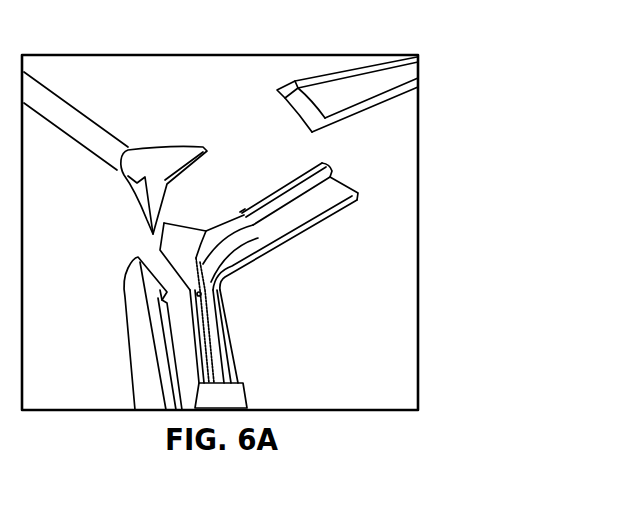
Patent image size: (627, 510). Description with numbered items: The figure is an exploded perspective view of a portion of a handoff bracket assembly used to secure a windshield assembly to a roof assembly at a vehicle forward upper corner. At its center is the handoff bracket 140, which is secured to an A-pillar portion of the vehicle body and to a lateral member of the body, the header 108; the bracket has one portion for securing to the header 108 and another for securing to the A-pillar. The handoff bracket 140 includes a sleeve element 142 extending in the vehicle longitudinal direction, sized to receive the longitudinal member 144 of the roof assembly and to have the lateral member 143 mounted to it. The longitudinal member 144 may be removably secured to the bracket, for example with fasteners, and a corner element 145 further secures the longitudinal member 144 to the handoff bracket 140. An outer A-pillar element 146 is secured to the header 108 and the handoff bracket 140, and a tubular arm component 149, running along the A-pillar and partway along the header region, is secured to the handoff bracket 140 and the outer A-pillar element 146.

The header 108 is at (225, 297).
The handoff bracket 140 is at (200, 224).
The sleeve element 142 is at (255, 257).
The lateral member 143 is at (373, 93).
The longitudinal member 144 is at (82, 108).
The corner element 145 is at (148, 160).
The outer A-pillar element 146 is at (128, 335).
The arm component 149 is at (215, 338).